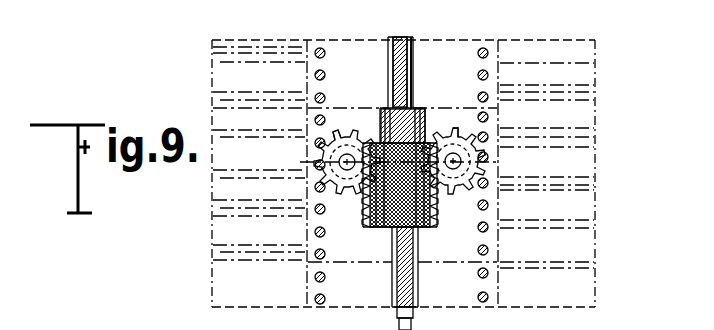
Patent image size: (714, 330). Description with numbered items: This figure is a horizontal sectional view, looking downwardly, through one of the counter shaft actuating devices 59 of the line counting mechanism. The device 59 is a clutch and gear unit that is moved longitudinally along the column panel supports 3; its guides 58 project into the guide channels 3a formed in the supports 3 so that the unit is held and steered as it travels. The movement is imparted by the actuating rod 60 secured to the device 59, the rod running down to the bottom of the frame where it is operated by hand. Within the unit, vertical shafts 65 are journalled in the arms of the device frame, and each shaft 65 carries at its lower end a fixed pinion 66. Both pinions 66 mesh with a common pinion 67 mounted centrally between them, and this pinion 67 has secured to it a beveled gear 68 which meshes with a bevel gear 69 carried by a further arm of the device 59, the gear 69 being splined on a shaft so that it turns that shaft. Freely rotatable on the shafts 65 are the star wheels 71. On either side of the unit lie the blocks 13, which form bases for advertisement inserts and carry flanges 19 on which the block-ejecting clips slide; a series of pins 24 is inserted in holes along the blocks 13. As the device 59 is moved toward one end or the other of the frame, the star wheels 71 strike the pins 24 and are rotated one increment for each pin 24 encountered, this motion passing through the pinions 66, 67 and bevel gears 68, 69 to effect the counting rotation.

The column panel support 3 is at (397, 37).
The guide channel 3a is at (385, 52).
The block 13 is at (220, 200).
The flange 19 is at (203, 112).
The pin 24 is at (324, 56).
The guide 58 is at (390, 100).
The counter shaft actuating device 59 is at (383, 109).
The actuating rod 60 is at (414, 322).
The vertical shaft 65 is at (340, 167).
The pinion 66 is at (316, 158).
The common pinion 67 is at (433, 213).
The beveled gear 68 is at (366, 211).
The bevel gear 69 is at (425, 113).
The star wheel 71 is at (343, 134).